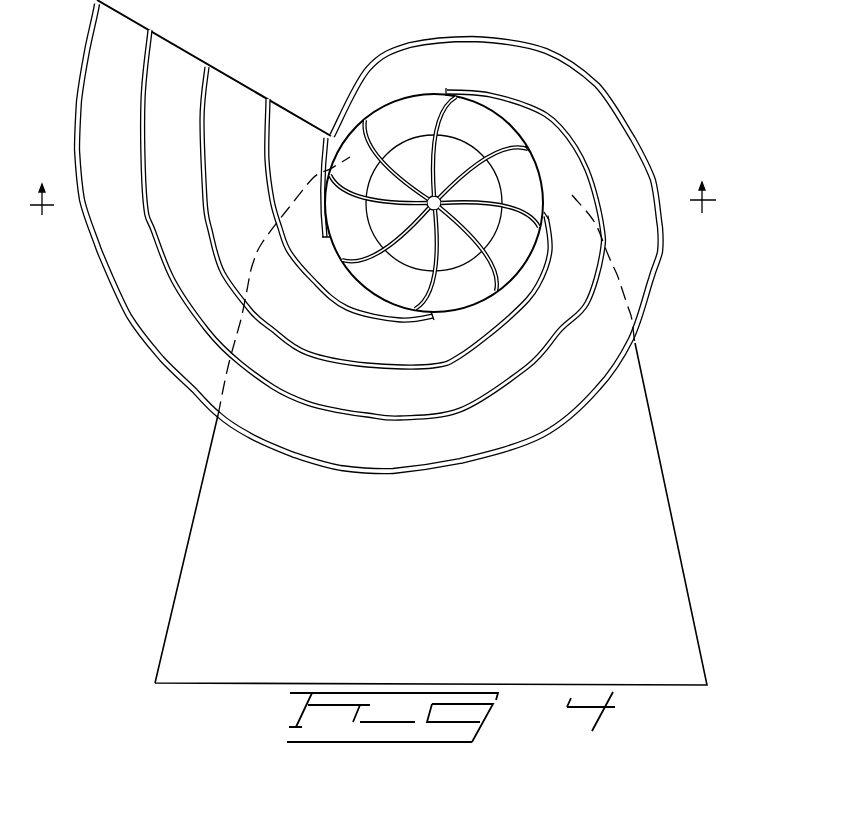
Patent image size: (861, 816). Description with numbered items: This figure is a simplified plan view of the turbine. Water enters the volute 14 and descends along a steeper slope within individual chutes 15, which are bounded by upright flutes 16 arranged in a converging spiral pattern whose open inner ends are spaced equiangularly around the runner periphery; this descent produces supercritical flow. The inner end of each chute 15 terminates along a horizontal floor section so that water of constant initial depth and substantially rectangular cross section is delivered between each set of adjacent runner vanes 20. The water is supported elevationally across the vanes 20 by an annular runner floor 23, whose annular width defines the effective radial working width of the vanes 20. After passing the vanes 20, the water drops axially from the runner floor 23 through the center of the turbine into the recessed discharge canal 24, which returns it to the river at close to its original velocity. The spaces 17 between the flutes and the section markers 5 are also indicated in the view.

The section line 5- 5 is at (371, 204).
The volute 14 is at (427, 44).
The chutes 15 is at (373, 240).
The upright flutes 16 is at (142, 173).
The inner flow channels 17 is at (240, 277).
The runner vanes 20 is at (530, 160).
The runner floor 23 is at (512, 142).
The discharge canal 24 is at (431, 514).